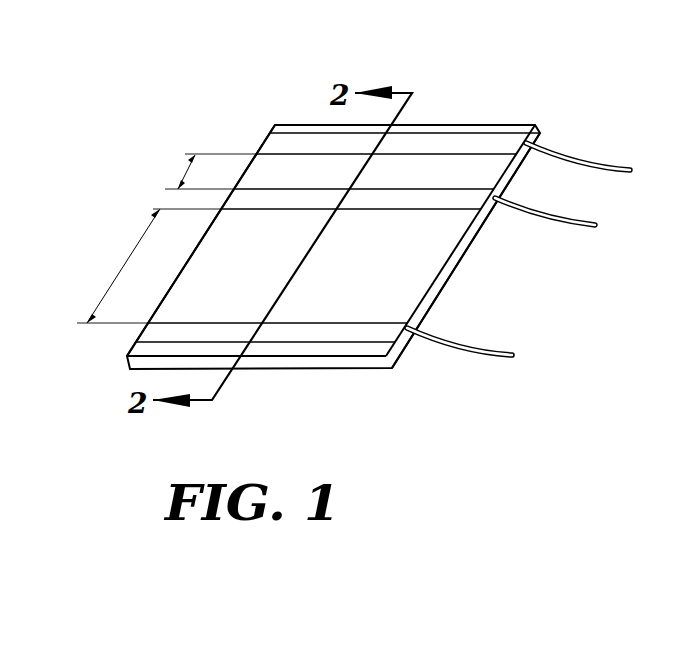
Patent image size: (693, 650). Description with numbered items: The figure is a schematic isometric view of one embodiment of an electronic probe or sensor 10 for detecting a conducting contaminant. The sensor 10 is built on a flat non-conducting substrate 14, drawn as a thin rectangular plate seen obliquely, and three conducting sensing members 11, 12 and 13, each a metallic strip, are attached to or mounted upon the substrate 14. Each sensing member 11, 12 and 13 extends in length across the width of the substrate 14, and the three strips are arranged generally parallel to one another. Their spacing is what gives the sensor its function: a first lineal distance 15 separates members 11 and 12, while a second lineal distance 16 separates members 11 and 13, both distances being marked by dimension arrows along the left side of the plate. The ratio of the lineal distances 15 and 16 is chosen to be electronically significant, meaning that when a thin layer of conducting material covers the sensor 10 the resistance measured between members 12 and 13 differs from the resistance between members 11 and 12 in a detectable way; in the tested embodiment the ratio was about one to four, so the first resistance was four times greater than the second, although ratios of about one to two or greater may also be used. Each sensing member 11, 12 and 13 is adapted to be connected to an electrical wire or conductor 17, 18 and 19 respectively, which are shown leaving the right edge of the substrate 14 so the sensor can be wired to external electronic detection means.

The electronic probe or sensor 10 is at (428, 460).
The conducting sensing member 11 is at (470, 193).
The conducting sensing member 12 is at (510, 135).
The conducting sensing member 13 is at (388, 330).
The non-conducting substrate 14 is at (467, 243).
The first lineal distance 15 is at (184, 172).
The second lineal distance 16 is at (130, 249).
The electrical wire or conductor 17 is at (571, 220).
The electrical wire or conductor 18 is at (592, 163).
The electrical wire or conductor 19 is at (497, 349).